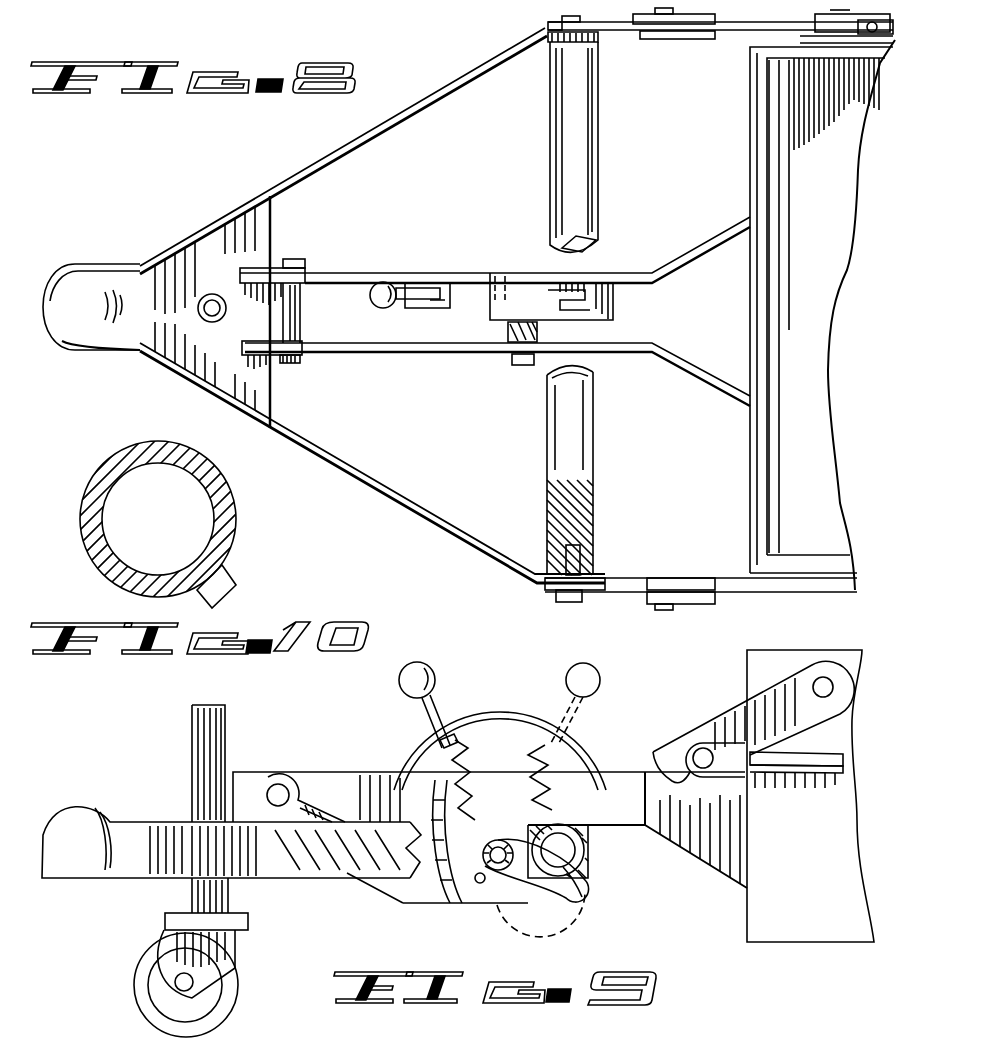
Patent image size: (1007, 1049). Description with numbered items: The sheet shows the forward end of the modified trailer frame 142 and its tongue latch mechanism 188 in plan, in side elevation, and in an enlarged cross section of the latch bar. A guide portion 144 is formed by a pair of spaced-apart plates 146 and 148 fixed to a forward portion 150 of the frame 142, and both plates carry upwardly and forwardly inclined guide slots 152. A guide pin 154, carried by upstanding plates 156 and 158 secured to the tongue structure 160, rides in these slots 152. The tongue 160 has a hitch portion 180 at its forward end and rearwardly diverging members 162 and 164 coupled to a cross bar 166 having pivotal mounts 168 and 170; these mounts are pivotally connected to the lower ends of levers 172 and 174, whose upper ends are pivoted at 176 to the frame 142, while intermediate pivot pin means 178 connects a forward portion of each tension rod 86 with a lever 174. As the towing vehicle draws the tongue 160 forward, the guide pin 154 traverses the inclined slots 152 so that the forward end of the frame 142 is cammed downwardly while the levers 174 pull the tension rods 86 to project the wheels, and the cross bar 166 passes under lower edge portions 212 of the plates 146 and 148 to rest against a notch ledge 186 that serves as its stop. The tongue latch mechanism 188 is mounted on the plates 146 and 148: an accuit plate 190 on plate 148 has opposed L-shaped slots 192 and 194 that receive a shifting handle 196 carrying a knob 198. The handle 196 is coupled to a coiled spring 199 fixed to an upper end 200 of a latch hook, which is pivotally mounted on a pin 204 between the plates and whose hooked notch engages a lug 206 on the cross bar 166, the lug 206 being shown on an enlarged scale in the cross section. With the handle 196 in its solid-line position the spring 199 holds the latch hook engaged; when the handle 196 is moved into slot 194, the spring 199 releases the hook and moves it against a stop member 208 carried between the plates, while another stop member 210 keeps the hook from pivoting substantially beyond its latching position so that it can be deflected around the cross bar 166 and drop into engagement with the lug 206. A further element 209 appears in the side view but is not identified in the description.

In FIG. 8, the tension rod 86 is at (866, 34).
In FIG. 9, the tension rod 86 is at (832, 772).
In FIG. 8, the frame 142 is at (750, 510).
In FIG. 8, the guide portion 144 is at (368, 262).
In FIG. 8, the plate 146 is at (337, 354).
In FIG. 9, the plate 146 is at (357, 790).
In FIG. 8, the plate 148 is at (332, 272).
In FIG. 9, the plate 148 is at (440, 791).
In FIG. 8, the forward portion of the frame 150 is at (750, 162).
In FIG. 9, the guide slot 152 is at (345, 815).
In FIG. 8, the guide pin 154 is at (290, 305).
In FIG. 9, the guide pin 154 is at (279, 784).
In FIG. 8, the upstanding plate 156 is at (263, 263).
In FIG. 8, the upstanding plate 158 is at (275, 372).
In FIG. 9, the upstanding plate 158 is at (253, 772).
In FIG. 9, the tongue structure 160 is at (301, 878).
In FIG. 8, the rearwardly diverging member 162 is at (358, 142).
In FIG. 8, the rearwardly diverging member 164 is at (380, 495).
In FIG. 8, the cross bar 166 is at (595, 462).
In FIG. 10, the cross bar 166 is at (108, 582).
In FIG. 9, the cross bar 166 is at (582, 848).
In FIG. 8, the pivotal mount 168 is at (546, 22).
In FIG. 8, the pivotal mount 170 is at (572, 600).
In FIG. 8, the lever 172 is at (616, 44).
In FIG. 9, the lever 174 is at (712, 730).
In FIG. 8, the upper lever pivot 176 is at (870, 40).
In FIG. 9, the upper lever pivot 176 is at (818, 678).
In FIG. 8, the intermediate pivot pin means 178 is at (644, 34).
In FIG. 9, the intermediate pivot pin means 178 is at (696, 748).
In FIG. 9, the hitch portion 180 is at (92, 803).
In FIG. 9, the notch ledge 186 is at (562, 741).
In FIG. 9, the tongue latch mechanism 188 is at (500, 692).
In FIG. 8, the accuit plate 190 is at (483, 278).
In FIG. 8, the L-shaped slot 192 is at (432, 310).
In FIG. 9, the L-shaped slot 192 is at (421, 742).
In FIG. 8, the L-shaped slot 194 is at (586, 310).
In FIG. 8, the shifting handle 196 is at (406, 302).
In FIG. 9, the shifting handle 196 is at (423, 722).
In FIG. 8, the knob 198 is at (384, 308).
In FIG. 9, the knob 198 is at (406, 692).
In FIG. 9, the coiled spring 199 is at (470, 753).
In FIG. 9, the upper end of latch hook 200 is at (435, 830).
In FIG. 8, the pin 204 is at (528, 358).
In FIG. 10, the pin 204 is at (228, 568).
In FIG. 9, the pin 204 is at (566, 895).
In FIG. 9, the lug 206 is at (582, 882).
In FIG. 9, the stop member 208 is at (529, 915).
In FIG. 9, the pin 209 is at (487, 900).
In FIG. 9, the stop member 210 is at (402, 840).
In FIG. 9, the lower edge portion 212 is at (702, 887).